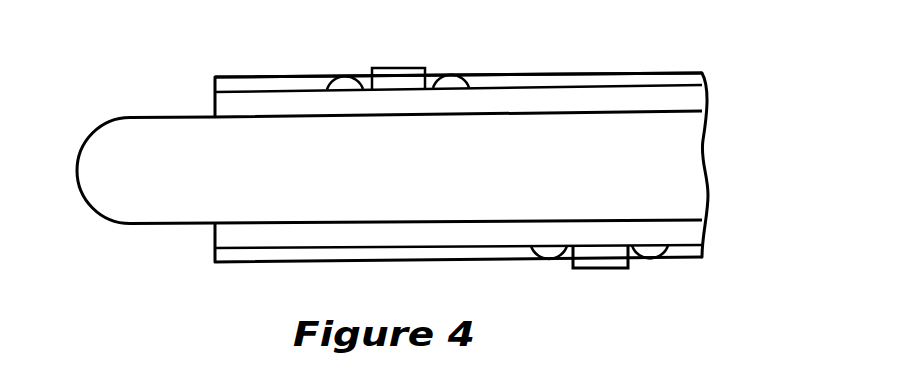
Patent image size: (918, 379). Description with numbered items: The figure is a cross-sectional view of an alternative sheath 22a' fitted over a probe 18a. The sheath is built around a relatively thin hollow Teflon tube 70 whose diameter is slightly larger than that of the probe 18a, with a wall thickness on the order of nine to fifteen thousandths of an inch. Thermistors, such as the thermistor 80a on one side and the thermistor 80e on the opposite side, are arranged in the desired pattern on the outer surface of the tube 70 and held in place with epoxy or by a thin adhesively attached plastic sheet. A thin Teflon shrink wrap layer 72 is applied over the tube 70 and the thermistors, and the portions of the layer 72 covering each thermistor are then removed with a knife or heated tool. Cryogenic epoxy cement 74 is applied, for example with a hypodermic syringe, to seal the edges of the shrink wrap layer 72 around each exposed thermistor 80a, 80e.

The probe 18a is at (128, 115).
The alternative sheath 22a' is at (449, 39).
The hollow Teflon tube 70 is at (708, 93).
The shrink wrap layer 72 is at (600, 75).
The cryogenic epoxy cement 74 is at (345, 80).
The thermistor 80a is at (397, 68).
The thermistor 80e is at (599, 268).